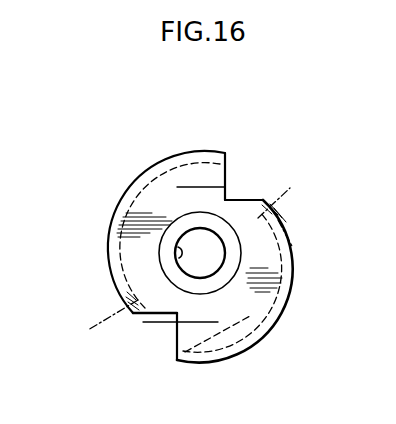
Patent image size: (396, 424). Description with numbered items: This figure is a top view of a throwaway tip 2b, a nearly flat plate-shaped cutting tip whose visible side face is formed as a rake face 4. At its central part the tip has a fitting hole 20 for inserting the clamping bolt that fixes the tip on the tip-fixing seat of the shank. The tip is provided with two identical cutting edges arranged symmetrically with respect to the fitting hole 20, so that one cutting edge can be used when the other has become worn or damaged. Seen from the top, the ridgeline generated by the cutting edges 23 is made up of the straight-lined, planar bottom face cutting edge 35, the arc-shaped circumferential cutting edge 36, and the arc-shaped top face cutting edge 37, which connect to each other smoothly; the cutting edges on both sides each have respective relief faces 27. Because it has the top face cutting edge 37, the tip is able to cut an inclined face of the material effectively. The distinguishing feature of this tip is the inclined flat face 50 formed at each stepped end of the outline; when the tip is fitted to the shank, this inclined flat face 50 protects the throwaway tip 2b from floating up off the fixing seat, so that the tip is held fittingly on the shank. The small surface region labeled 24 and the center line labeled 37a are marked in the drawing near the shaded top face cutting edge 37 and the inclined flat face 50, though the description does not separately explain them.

The throwaway tip 2b is at (116, 199).
The rake face 4 is at (283, 291).
The fitting hole 20 is at (178, 249).
The cutting edges 23 is at (273, 311).
The step face 24 is at (177, 349).
The relief face 27 is at (251, 336).
The bottom face cutting edge 35 is at (200, 151).
The circumferential cutting edge 36 is at (150, 176).
The top face cutting edge 37 is at (285, 226).
The center line 37a is at (283, 197).
The inclined flat face 50 is at (247, 198).